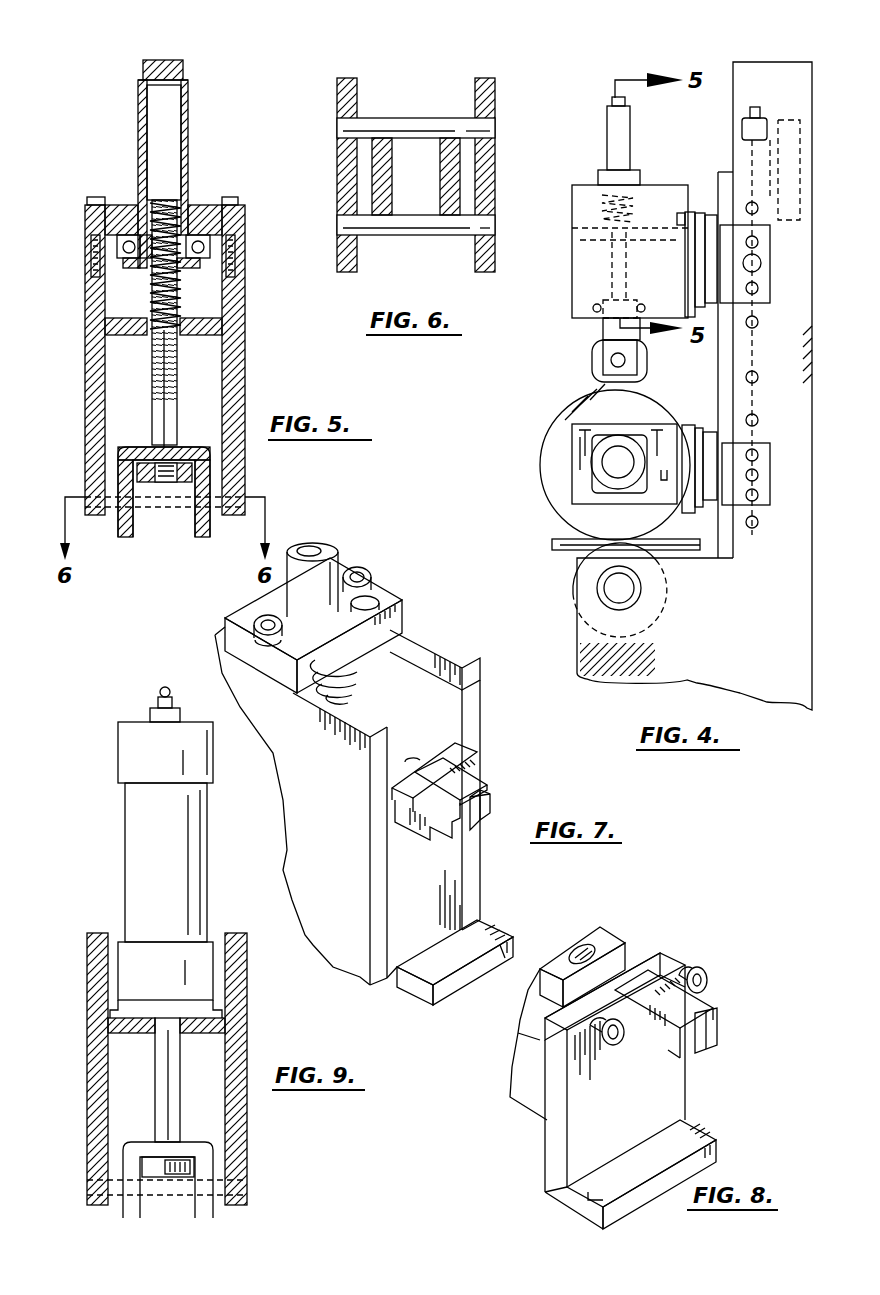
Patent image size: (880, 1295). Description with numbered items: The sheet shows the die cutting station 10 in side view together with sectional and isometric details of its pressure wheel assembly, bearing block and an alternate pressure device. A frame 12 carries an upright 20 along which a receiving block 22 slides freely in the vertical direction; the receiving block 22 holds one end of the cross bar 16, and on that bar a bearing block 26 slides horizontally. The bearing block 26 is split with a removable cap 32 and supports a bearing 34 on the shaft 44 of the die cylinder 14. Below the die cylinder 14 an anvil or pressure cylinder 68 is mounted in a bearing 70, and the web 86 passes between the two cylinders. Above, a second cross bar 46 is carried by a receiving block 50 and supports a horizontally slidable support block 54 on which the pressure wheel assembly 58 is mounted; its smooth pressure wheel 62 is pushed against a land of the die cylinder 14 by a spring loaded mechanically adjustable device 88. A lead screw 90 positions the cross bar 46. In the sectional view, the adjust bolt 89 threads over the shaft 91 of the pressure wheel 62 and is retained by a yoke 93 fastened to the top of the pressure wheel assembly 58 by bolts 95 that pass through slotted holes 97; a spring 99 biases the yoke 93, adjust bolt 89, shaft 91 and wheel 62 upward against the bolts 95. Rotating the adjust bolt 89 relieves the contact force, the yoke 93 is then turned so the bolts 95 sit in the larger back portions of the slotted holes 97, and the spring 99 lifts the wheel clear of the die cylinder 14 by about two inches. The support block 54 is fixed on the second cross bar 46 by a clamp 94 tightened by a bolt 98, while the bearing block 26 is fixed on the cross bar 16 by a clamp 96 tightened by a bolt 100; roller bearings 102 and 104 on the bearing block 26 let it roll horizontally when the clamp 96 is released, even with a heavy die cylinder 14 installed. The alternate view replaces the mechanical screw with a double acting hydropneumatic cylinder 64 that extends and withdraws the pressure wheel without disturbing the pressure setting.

In FIG. 4, the die cutting station 10 is at (500, 470).
In FIG. 4, the frame 12 is at (697, 683).
In FIG. 4, the die cylinder 14 is at (565, 400).
In FIG. 4, the cross bar 16 is at (700, 500).
In FIG. 4, the upright 20 is at (730, 533).
In FIG. 4, the receiving block 22 is at (768, 445).
In FIG. 4, the bearing block 26 is at (583, 498).
In FIG. 7, the bearing block 26 is at (292, 806).
In FIG. 8, the bearing block 26 is at (510, 1077).
In FIG. 4, the removable cap 32 is at (588, 425).
In FIG. 8, the removable cap 32 is at (608, 940).
In FIG. 4, the bearing 34 is at (598, 473).
In FIG. 4, the shaft 44 is at (610, 462).
In FIG. 4, the second cross bar 46 is at (700, 237).
In FIG. 4, the receiving block 50 is at (765, 287).
In FIG. 7, the support block 54 is at (457, 750).
In FIG. 5, the pressure wheel assembly 58 is at (248, 326).
In FIG. 6, the pressure wheel assembly 58 is at (345, 273).
In FIG. 4, the pressure wheel assembly 58 is at (598, 123).
In FIG. 7, the pressure wheel assembly 58 is at (430, 632).
In FIG. 9, the pressure wheel assembly 58 is at (258, 1030).
In FIG. 4, the pressure wheel 62 is at (595, 345).
In FIG. 9, the hydropneumatic cylinder 64 is at (115, 868).
In FIG. 4, the anvil or pressure cylinder 68 is at (572, 595).
In FIG. 4, the bearing 70 is at (607, 603).
In FIG. 4, the web 86 is at (555, 547).
In FIG. 5, the spring loaded mechanically adjustable device 88 is at (188, 133).
In FIG. 4, the spring loaded mechanically adjustable device 88 is at (632, 140).
In FIG. 7, the spring loaded mechanically adjustable device 88 is at (337, 563).
In FIG. 5, the adjust bolt 89 is at (177, 60).
In FIG. 4, the lead screw 90 is at (757, 107).
In FIG. 5, the shaft 91 is at (153, 387).
In FIG. 5, the yoke 93 is at (200, 197).
In FIG. 7, the yoke 93 is at (340, 563).
In FIG. 7, the clamp 94 is at (480, 777).
In FIG. 5, the bolt 95 is at (88, 197).
In FIG. 7, the bolt 95 is at (363, 572).
In FIG. 8, the clamp 96 is at (697, 997).
In FIG. 7, the slotted hole 97 is at (380, 600).
In FIG. 7, the bolt 98 is at (485, 818).
In FIG. 5, the spring 99 is at (143, 292).
In FIG. 7, the spring 99 is at (357, 672).
In FIG. 8, the bolt 100 is at (703, 1043).
In FIG. 8, the roller bearing 102 is at (612, 1045).
In FIG. 8, the roller bearing 104 is at (707, 970).